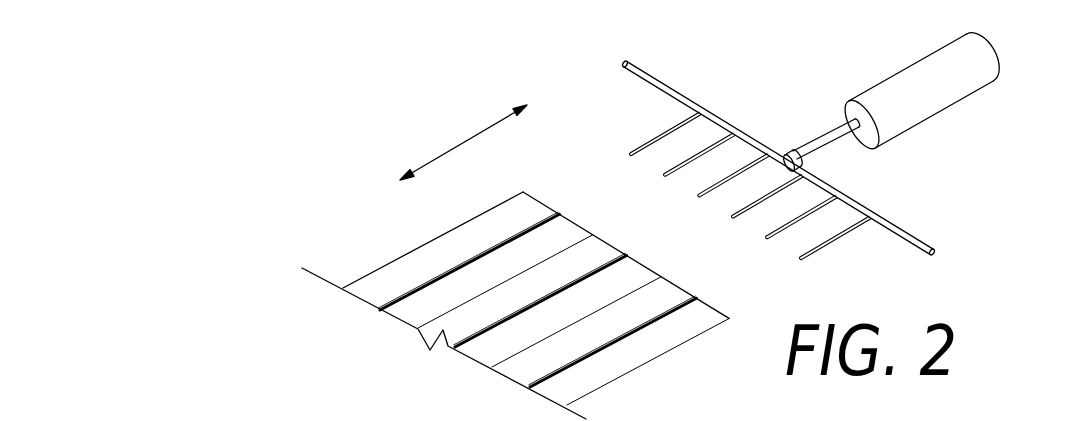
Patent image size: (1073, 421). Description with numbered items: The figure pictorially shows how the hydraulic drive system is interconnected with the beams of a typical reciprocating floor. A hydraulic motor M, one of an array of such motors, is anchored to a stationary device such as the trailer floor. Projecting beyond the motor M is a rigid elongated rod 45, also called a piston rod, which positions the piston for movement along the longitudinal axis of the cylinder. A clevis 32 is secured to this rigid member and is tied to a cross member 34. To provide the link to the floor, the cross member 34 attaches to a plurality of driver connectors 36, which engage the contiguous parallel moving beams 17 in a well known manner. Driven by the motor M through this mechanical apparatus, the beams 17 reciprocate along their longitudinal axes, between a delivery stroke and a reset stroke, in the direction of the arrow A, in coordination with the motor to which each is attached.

The moving beams 17 is at (465, 243).
The arrow A is at (462, 142).
The clevis 32 is at (791, 145).
The cross member 34 is at (914, 238).
The driver connectors 36 is at (640, 146).
The rigid elongated rod 45 is at (830, 147).
The hydraulic motor M is at (952, 124).